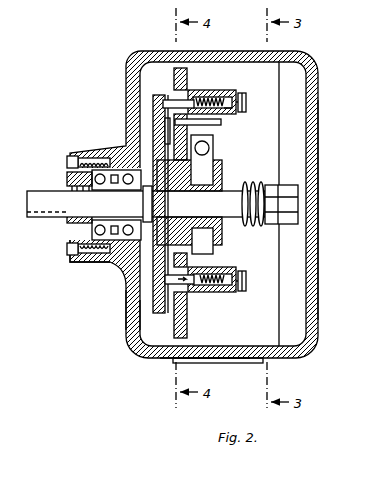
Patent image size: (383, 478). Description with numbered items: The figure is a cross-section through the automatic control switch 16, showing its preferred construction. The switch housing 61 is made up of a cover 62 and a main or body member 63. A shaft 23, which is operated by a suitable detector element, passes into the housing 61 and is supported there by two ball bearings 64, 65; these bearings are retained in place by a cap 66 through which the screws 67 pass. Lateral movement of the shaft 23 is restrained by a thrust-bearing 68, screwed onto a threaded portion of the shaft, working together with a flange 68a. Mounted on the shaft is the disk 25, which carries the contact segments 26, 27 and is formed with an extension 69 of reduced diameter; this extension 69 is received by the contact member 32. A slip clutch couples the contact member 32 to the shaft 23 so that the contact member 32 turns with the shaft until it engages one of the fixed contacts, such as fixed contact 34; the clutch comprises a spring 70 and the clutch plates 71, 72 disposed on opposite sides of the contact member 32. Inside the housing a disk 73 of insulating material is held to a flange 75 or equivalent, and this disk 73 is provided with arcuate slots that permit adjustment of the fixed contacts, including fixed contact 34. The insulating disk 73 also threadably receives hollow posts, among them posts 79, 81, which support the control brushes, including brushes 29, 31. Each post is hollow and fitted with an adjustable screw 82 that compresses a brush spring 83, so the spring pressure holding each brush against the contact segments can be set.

The automatic control switch 16 is at (334, 108).
The shaft 23 is at (48, 218).
The disk 25 is at (153, 108).
The contact segment 26 is at (165, 100).
The contact segment 27 is at (188, 122).
The control brush 29 is at (205, 293).
The control brush 31 is at (212, 93).
The contact member 32 is at (213, 158).
The fixed contact 34 is at (211, 148).
The switch housing 61 is at (152, 360).
The cover 62 is at (320, 293).
The main or body member 63 is at (111, 348).
The ball bearing 64 is at (110, 262).
The ball bearing 65 is at (90, 254).
The cap 66 is at (90, 156).
The screw 67 is at (70, 160).
The thrust-bearing 68 is at (70, 185).
The flange 68a is at (152, 205).
The extension 69 is at (200, 167).
The spring 70 is at (262, 226).
The clutch plate 71 is at (222, 232).
The clutch plate 72 is at (250, 184).
The disk 73 is at (187, 80).
The flange 75 is at (157, 88).
The post 79 is at (236, 294).
The post 81 is at (226, 112).
The adjustable screw 82 is at (247, 102).
The brush spring 83 is at (225, 92).